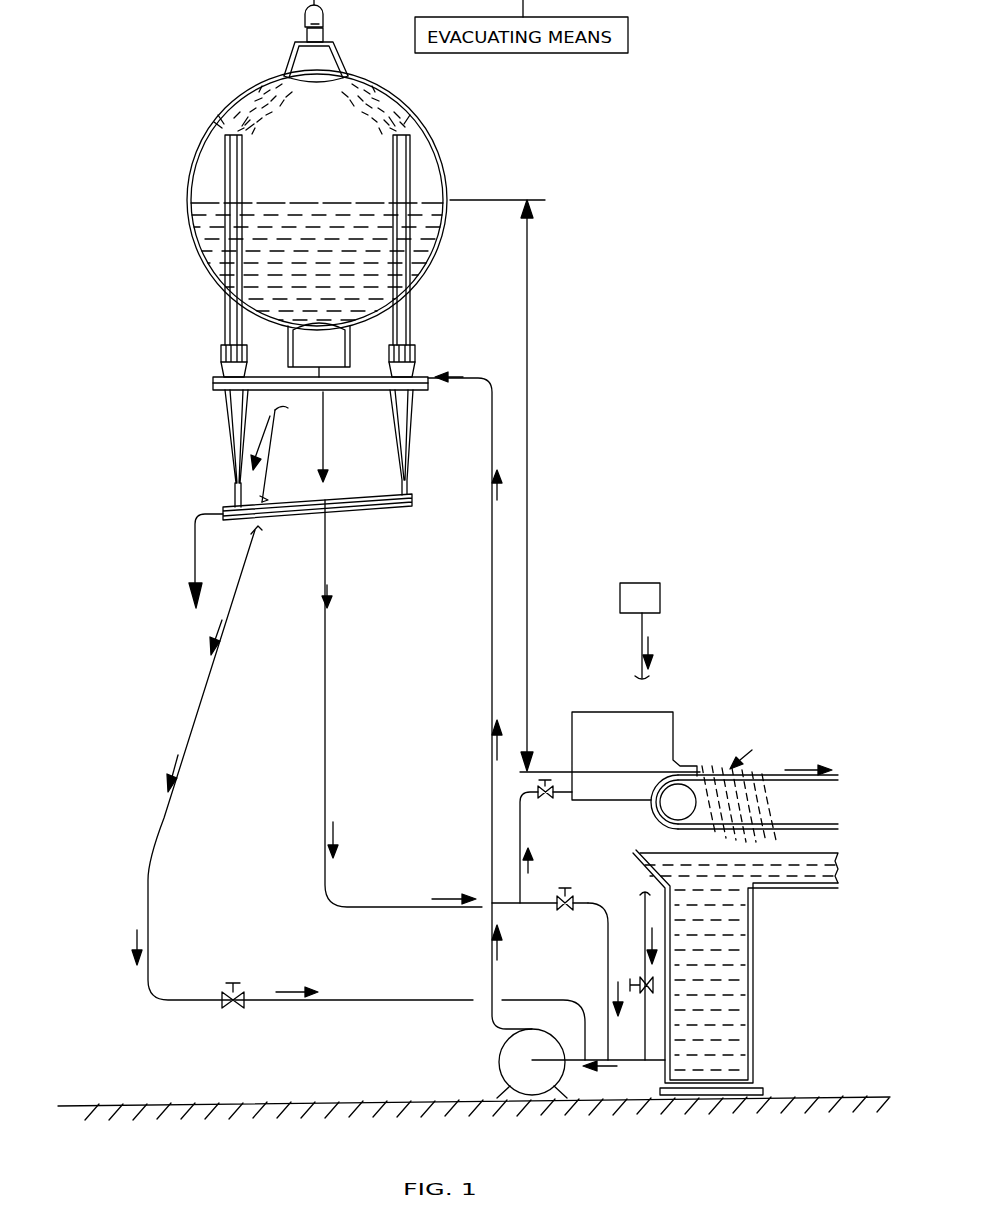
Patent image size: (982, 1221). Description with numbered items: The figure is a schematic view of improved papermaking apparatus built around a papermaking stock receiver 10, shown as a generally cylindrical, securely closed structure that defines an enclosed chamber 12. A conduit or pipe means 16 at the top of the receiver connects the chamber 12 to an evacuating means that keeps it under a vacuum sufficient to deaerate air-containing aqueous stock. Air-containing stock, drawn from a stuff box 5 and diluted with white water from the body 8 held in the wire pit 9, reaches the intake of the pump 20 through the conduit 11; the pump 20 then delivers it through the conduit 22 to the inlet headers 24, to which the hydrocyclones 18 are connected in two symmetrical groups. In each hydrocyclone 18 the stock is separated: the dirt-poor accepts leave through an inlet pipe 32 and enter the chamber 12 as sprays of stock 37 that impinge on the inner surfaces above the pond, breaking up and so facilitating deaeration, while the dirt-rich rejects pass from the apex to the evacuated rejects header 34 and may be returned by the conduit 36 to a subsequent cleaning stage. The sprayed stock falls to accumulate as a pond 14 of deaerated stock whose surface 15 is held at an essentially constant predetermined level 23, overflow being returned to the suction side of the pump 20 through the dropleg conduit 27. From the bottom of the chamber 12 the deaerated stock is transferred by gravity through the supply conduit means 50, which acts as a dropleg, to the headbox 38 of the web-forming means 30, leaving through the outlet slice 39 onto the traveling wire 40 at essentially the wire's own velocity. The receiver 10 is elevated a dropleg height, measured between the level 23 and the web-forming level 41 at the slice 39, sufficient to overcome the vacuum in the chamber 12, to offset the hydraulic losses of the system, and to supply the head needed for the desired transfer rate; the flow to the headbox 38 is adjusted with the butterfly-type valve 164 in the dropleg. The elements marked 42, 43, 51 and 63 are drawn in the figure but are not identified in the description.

The stuff box 5 is at (660, 583).
The body of white water 8 is at (730, 918).
The wire pit 9 is at (753, 957).
The papermaking stock receiver 10 is at (420, 119).
The conduit 11 is at (625, 1057).
The enclosed chamber 12 is at (326, 150).
The pond of deaerated stock 14 is at (330, 271).
The pond surface 15 is at (338, 203).
The conduit or pipe means 16 is at (307, 30).
The hydrocyclones 18 is at (230, 448).
The pump 20 is at (498, 1058).
The conduit 22 is at (492, 780).
The predetermined level 23 is at (530, 200).
The inlet headers 24 is at (343, 391).
The dropleg conduit 27 is at (180, 784).
The web-forming means 30 is at (752, 751).
The inlet pipe 32 is at (225, 317).
The rejects header 34 is at (378, 508).
The conduit 36 is at (195, 561).
The sprays of stock 37 is at (384, 105).
The headbox 38 is at (625, 744).
The outlet slice 39 is at (697, 770).
The traveling wire 40 is at (838, 773).
The web-forming level 41 is at (540, 738).
The bypass valve 42 is at (565, 888).
The bypass pipe 43 is at (606, 941).
The supply conduit means 50 is at (322, 472).
The drain pipe 51 is at (327, 693).
The outlet tube 63 is at (288, 346).
The butterfly-type valve 164 is at (548, 798).